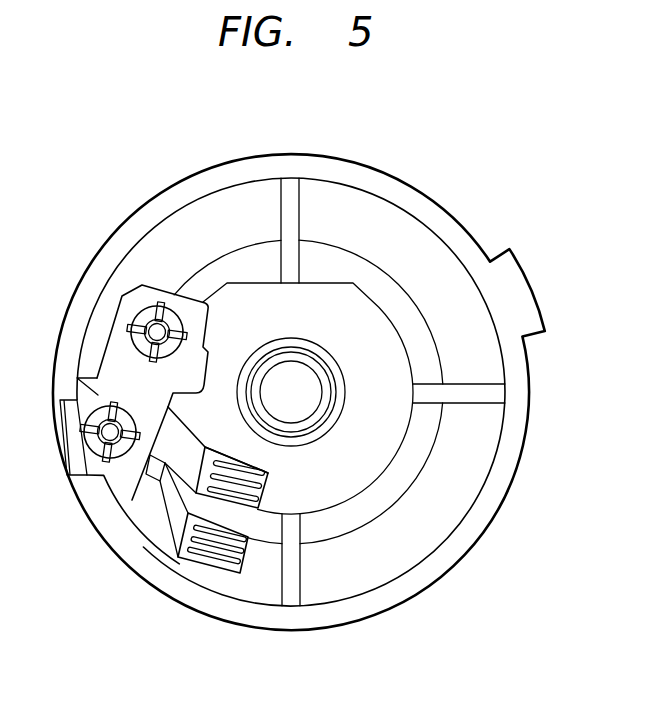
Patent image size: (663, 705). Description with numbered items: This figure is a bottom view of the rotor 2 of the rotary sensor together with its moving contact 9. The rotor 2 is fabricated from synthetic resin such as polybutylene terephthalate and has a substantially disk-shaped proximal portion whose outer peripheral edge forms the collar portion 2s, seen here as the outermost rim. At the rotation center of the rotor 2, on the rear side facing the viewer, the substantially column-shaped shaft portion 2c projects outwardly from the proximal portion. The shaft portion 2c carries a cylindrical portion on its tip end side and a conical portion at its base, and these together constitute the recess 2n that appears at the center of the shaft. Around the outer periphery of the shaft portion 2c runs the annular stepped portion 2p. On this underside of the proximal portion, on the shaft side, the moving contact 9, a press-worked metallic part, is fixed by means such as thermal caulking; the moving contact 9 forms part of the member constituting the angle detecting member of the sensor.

The rotor 2 is at (381, 141).
The collar portion 2s is at (443, 207).
The shaft portion 2c is at (344, 390).
The recess 2n is at (300, 400).
The annular stepped portion 2p is at (291, 435).
The moving contact 9 is at (157, 510).